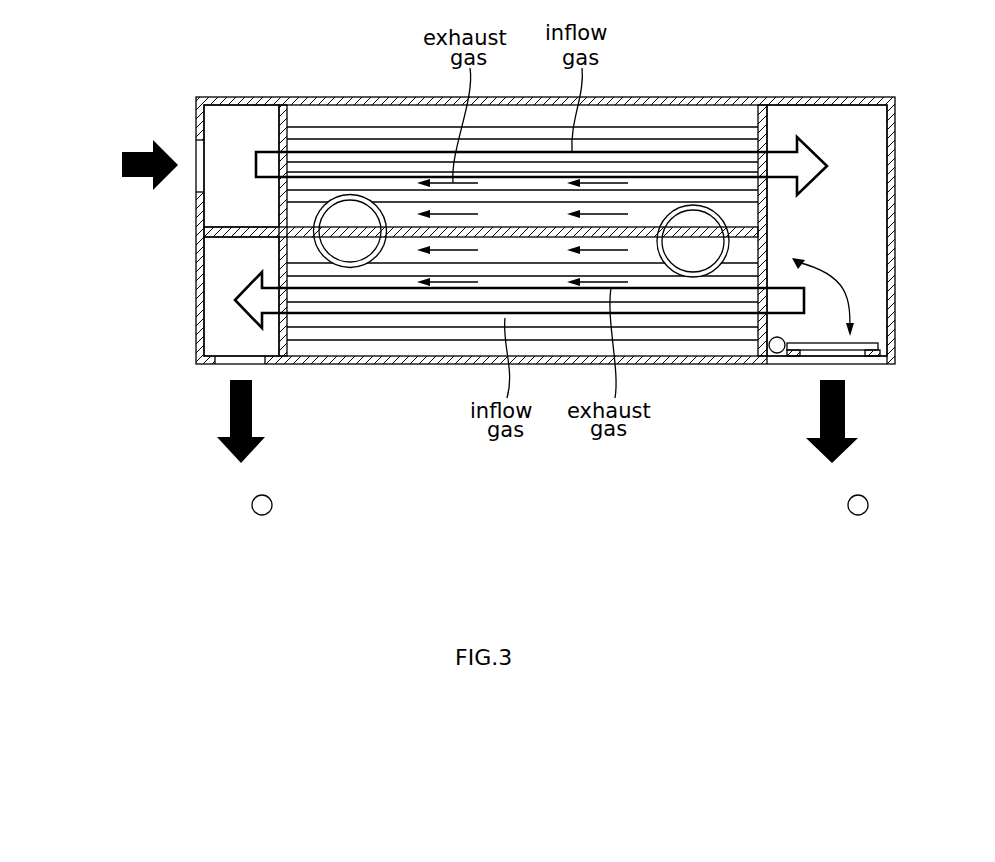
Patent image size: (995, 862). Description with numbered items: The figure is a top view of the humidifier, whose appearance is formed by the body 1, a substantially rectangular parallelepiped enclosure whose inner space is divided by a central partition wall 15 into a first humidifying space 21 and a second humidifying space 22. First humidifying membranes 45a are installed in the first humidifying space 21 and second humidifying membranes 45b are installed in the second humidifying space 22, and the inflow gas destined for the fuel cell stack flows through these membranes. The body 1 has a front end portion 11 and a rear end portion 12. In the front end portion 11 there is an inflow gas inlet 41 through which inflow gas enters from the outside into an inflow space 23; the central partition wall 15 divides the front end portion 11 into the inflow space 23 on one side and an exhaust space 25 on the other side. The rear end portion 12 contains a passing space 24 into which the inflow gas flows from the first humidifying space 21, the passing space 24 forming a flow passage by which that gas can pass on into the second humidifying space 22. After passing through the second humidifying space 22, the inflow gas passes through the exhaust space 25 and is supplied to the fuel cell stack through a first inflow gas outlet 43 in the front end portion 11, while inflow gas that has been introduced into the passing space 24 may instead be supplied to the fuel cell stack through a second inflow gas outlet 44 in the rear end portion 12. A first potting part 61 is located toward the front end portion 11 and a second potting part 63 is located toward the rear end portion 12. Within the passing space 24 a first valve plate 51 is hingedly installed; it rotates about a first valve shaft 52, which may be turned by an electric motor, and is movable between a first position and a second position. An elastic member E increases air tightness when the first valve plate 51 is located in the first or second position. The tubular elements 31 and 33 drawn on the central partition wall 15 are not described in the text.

The body 1 is at (822, 78).
The front end portion 11 is at (197, 285).
The rear end portion 12 is at (895, 272).
The central partition wall 15 is at (197, 228).
The first humidifying space 21 is at (670, 108).
The second humidifying space 22 is at (428, 355).
The inflow space 23 is at (228, 108).
The passing space 24 is at (877, 217).
The exhaust space 25 is at (212, 329).
The first tube 31 is at (693, 277).
The second tube 33 is at (347, 266).
The inflow gas inlet 41 is at (197, 148).
The first inflow gas outlet 43 is at (225, 360).
The second inflow gas outlet 44 is at (795, 358).
The first humidifying membranes 45a is at (367, 175).
The second humidifying membranes 45b is at (387, 330).
The first valve plate 51 is at (867, 340).
The first valve shaft 52 is at (773, 352).
The first potting part 61 is at (280, 132).
The second potting part 63 is at (765, 208).
The elastic member E is at (802, 353).